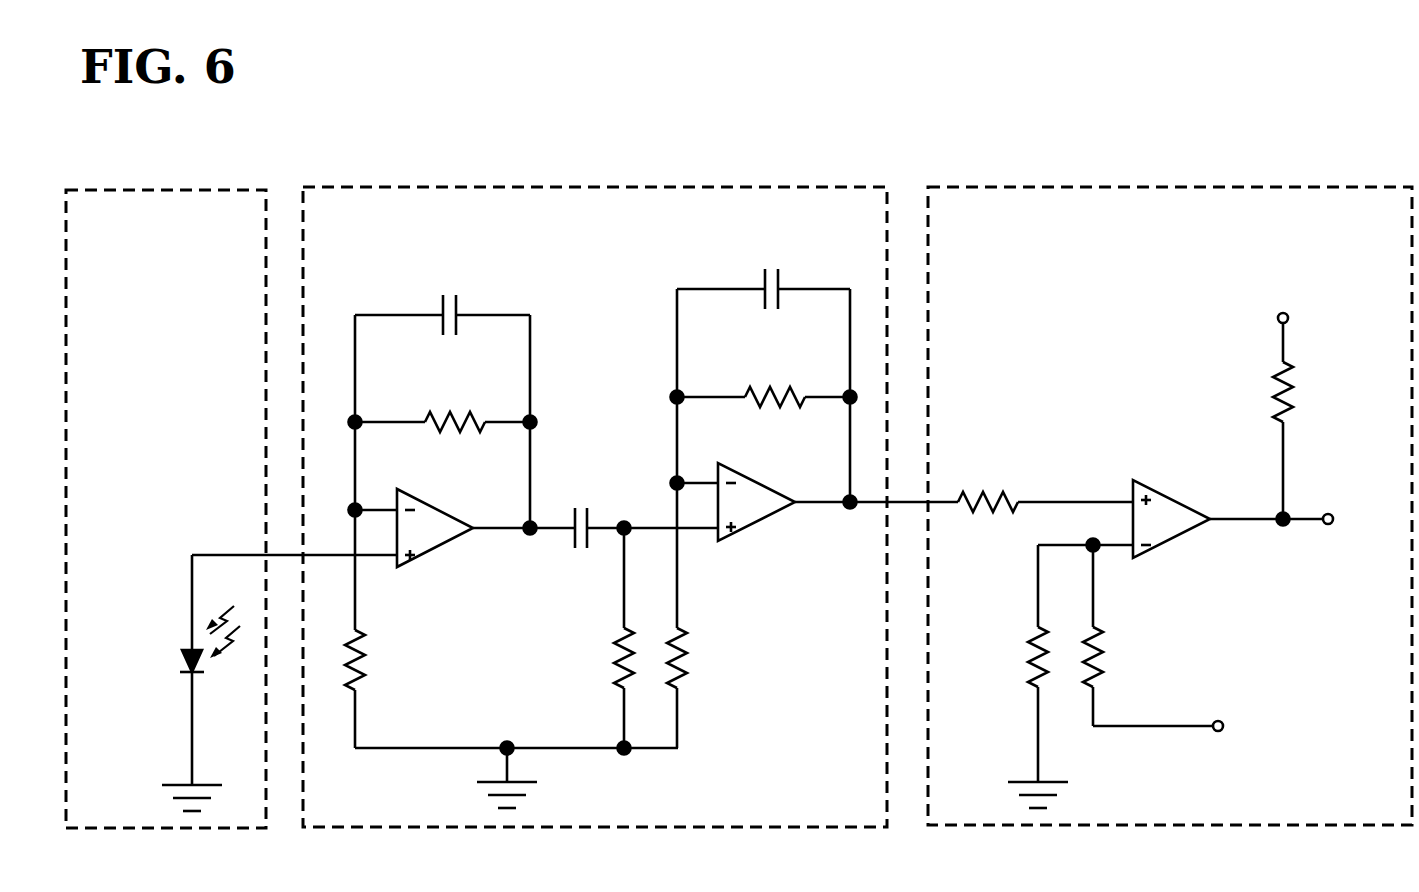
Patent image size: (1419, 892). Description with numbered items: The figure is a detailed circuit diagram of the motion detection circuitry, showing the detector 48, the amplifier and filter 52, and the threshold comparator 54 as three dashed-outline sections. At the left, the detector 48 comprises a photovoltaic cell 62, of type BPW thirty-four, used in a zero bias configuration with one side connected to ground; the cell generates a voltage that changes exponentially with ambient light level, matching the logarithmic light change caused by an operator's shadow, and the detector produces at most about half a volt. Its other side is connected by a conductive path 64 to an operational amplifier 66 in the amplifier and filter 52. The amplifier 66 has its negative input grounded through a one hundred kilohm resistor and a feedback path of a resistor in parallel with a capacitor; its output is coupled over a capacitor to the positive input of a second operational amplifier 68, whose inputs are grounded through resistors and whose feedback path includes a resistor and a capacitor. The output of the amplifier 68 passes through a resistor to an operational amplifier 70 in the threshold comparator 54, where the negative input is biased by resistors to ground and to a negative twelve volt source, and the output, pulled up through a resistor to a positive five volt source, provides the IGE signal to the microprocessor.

The detector 48 is at (160, 190).
The amplifier and filter 52 is at (698, 187).
The threshold comparator 54 is at (1295, 187).
The photovoltaic cell 62 is at (190, 672).
The conductive path 64 is at (220, 555).
The operational amplifier 66 is at (430, 556).
The second operational amplifier 68 is at (755, 527).
The operational amplifier 70 is at (1175, 545).